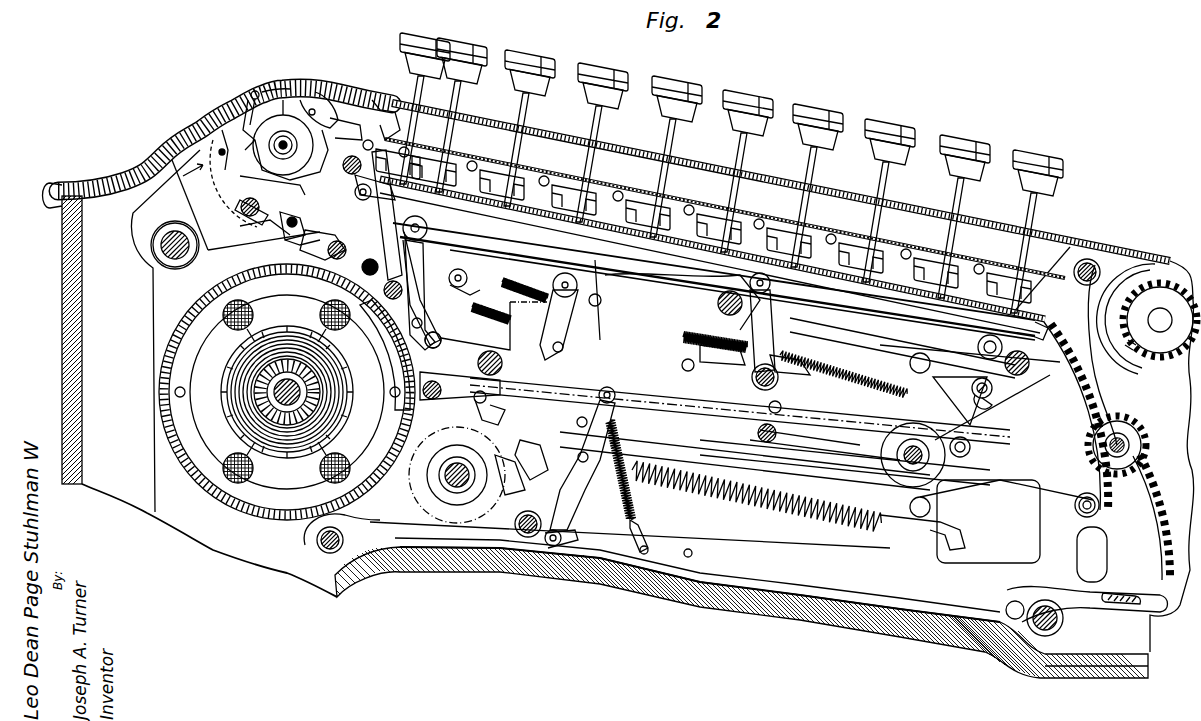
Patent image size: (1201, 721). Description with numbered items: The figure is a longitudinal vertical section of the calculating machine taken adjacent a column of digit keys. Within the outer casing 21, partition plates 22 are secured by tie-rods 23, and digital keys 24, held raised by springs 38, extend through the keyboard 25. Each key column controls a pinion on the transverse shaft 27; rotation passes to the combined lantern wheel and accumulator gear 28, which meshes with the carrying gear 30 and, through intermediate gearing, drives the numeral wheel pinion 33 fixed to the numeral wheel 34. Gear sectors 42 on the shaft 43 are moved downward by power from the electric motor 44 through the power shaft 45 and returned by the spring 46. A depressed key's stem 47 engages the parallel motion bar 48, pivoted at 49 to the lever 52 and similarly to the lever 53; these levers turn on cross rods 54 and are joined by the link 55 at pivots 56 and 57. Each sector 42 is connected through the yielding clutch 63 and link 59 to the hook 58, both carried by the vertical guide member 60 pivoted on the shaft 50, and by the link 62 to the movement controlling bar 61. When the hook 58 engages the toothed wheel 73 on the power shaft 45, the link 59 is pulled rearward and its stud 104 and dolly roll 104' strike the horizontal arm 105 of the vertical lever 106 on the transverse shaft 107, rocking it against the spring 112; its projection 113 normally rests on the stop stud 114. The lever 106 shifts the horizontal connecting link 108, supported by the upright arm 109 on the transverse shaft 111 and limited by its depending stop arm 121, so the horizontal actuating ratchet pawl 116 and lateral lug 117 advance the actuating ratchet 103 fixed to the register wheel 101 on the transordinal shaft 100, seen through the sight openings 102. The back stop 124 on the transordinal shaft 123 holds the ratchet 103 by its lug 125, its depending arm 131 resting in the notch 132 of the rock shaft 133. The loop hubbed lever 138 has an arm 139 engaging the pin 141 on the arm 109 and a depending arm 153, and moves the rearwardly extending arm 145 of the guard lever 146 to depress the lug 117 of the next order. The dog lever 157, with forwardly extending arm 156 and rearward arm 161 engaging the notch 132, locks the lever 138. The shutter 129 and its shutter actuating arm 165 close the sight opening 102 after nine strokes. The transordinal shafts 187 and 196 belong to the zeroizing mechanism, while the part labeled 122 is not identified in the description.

The outer casing 21 is at (122, 178).
The partition plates 22 is at (795, 596).
The tie-rods 23 is at (318, 548).
The digital keys 24 is at (972, 130).
The keyboard 25 is at (1095, 420).
The transverse shaft 27 is at (1108, 445).
The combined lantern wheel and accumulator gear 28 is at (1140, 455).
The carrying gear 30 is at (1152, 498).
The numeral wheel pinion 33 is at (1135, 308).
The numeral wheel 34 is at (1142, 290).
The springs 38 is at (380, 108).
The gear sectors 42 is at (1041, 321).
The shaft 43 is at (935, 465).
The electric motor 44 is at (236, 498).
The power shaft 45 is at (448, 479).
The spring 46 is at (845, 542).
The stem 47 is at (876, 178).
The parallel motion bar 48 is at (548, 212).
The pivot 49 is at (912, 360).
The shaft 50 is at (576, 528).
The lever 52 is at (985, 425).
The lever 53 is at (486, 326).
The cross shafts or rods 54 is at (508, 290).
The link 55 is at (840, 420).
The pivot 56 is at (972, 452).
The pivot 57 is at (430, 320).
The hook 58 is at (492, 412).
The link 59 is at (665, 420).
The vertical guide member 60 is at (580, 492).
The movement controlling bar 61 is at (725, 265).
The link 62 is at (856, 370).
The yielding clutch 63 is at (932, 502).
The toothed wheel 73 is at (512, 435).
The transordinal shaft 100 is at (296, 138).
The register wheels 101 is at (285, 100).
The sight openings 102 is at (325, 115).
The actuating ratchet 103 is at (302, 100).
The stud 104 is at (845, 468).
The dolly roll 104' is at (810, 432).
The horizontal arm 105 is at (745, 482).
The vertical lever 106 is at (740, 411).
The transverse shaft 107 is at (790, 375).
The horizontal connecting link 108 is at (585, 316).
The upright arm 109 is at (742, 287).
The transverse shaft 111 is at (405, 325).
The spring 112 is at (713, 359).
The projection 113 is at (748, 285).
The stop stud 114 is at (722, 310).
The horizontal actuating ratchet pawl 116 is at (283, 233).
The lateral lug 117 is at (240, 178).
The depending stop arm 121 is at (628, 300).
The plate 122 is at (181, 205).
The transordinal shaft 123 is at (196, 190).
The back stop 124 is at (215, 120).
The lateral projection or lug 125 is at (250, 96).
The shutter 129 is at (280, 90).
The depending arm 131 is at (240, 185).
The notch 132 is at (250, 225).
The transordinal rock shaft 133 is at (244, 215).
The loop hubbed lever 138 is at (390, 170).
The arm 139 is at (426, 232).
The pin 141 is at (388, 300).
The rearwardly extending arm 145 is at (288, 148).
The guard lever 146 is at (378, 158).
The depending arm 153 is at (350, 248).
The forwardly extending arm 156 is at (317, 246).
The dog lever 157 is at (285, 245).
The arm 161 is at (250, 240).
The shutter actuating arm 165 is at (308, 114).
The transordinal shaft 187 is at (519, 524).
The transordinal shaft 196 is at (1035, 632).